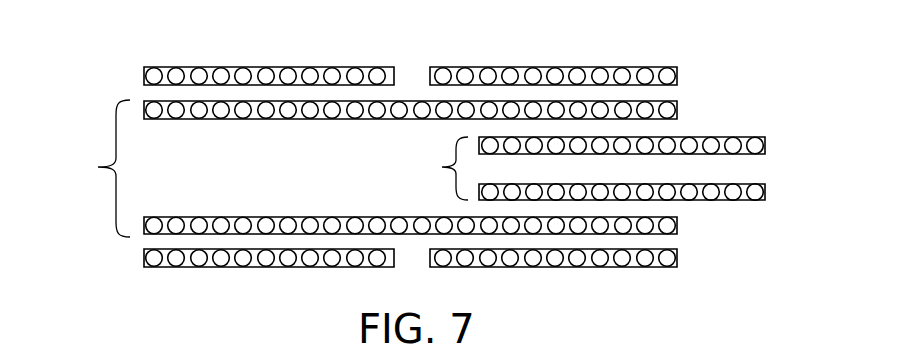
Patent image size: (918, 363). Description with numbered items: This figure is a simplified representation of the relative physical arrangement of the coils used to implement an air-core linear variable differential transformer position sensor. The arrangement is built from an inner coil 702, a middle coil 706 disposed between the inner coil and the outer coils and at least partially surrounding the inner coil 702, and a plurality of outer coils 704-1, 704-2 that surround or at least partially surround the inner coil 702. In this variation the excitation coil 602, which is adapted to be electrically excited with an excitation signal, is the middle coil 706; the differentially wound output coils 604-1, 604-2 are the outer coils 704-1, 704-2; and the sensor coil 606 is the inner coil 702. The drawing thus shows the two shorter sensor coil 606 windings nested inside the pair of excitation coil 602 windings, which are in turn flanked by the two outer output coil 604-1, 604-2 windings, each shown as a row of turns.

The excitation coil 602 is at (263, 120).
The first output coil 604-1 is at (602, 70).
The second output coil 604-2 is at (243, 70).
The sensor coil 606 is at (765, 145).
The inner coil 702 is at (613, 168).
The first outer coil 704-1 is at (677, 75).
The second outer coil 704-2 is at (144, 75).
The middle coil 706 is at (358, 168).